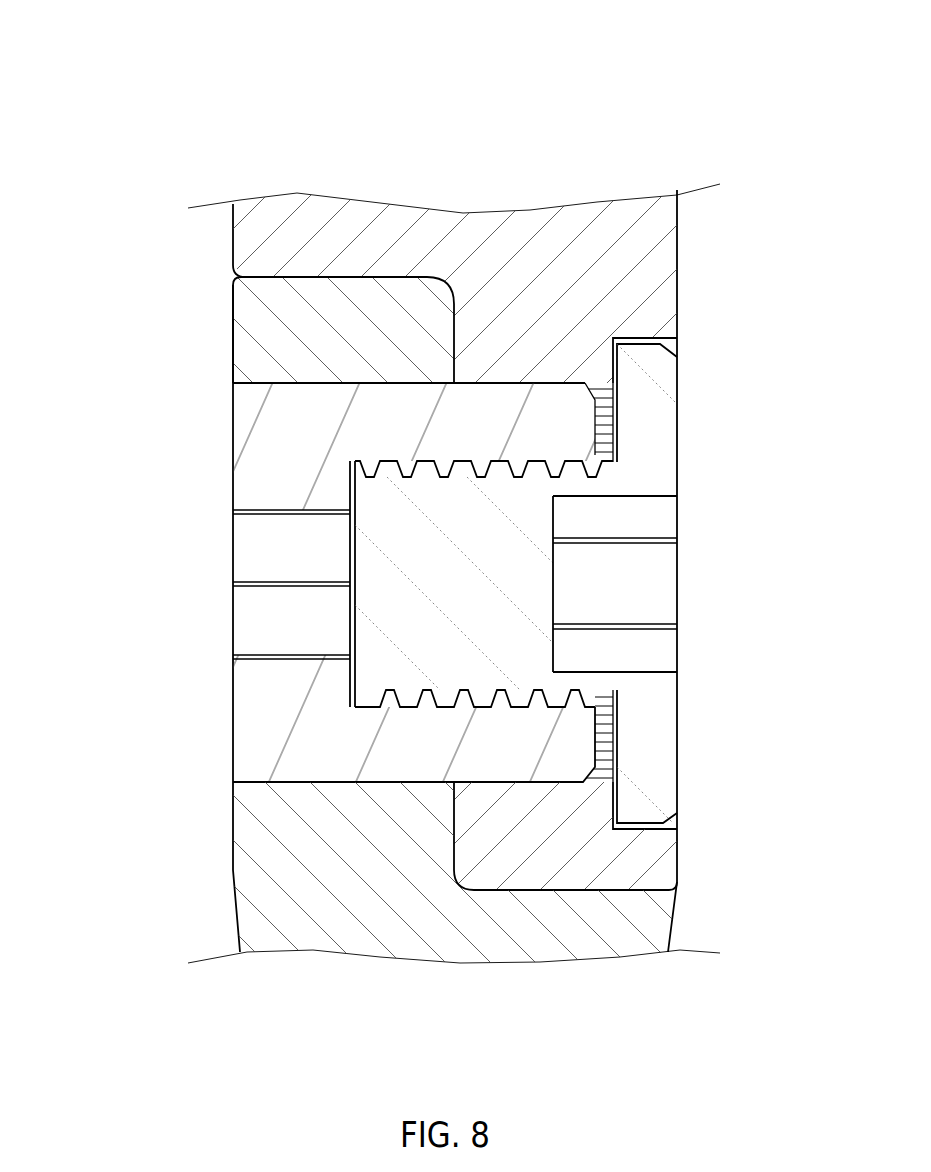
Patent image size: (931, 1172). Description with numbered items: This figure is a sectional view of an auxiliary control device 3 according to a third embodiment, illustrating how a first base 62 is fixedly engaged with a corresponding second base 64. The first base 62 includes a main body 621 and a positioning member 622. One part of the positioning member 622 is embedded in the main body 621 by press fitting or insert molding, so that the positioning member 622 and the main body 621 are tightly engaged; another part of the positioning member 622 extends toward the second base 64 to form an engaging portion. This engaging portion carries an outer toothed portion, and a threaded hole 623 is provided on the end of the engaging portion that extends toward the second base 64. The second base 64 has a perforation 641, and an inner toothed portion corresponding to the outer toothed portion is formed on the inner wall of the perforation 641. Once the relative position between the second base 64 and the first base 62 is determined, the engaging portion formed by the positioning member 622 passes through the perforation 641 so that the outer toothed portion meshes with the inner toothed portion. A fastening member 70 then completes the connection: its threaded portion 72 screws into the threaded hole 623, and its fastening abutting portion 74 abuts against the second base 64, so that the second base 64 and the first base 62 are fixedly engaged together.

The auxiliary control device 3 is at (203, 135).
The second base 64 is at (268, 247).
The perforation 641 is at (510, 378).
The first base 62 is at (125, 708).
The main body 621 is at (350, 898).
The positioning member 622 is at (350, 740).
The threaded hole 623 is at (387, 458).
The fastening member 70 is at (780, 735).
The threaded portion 72 is at (498, 765).
The fastening abutting portion 74 is at (652, 745).